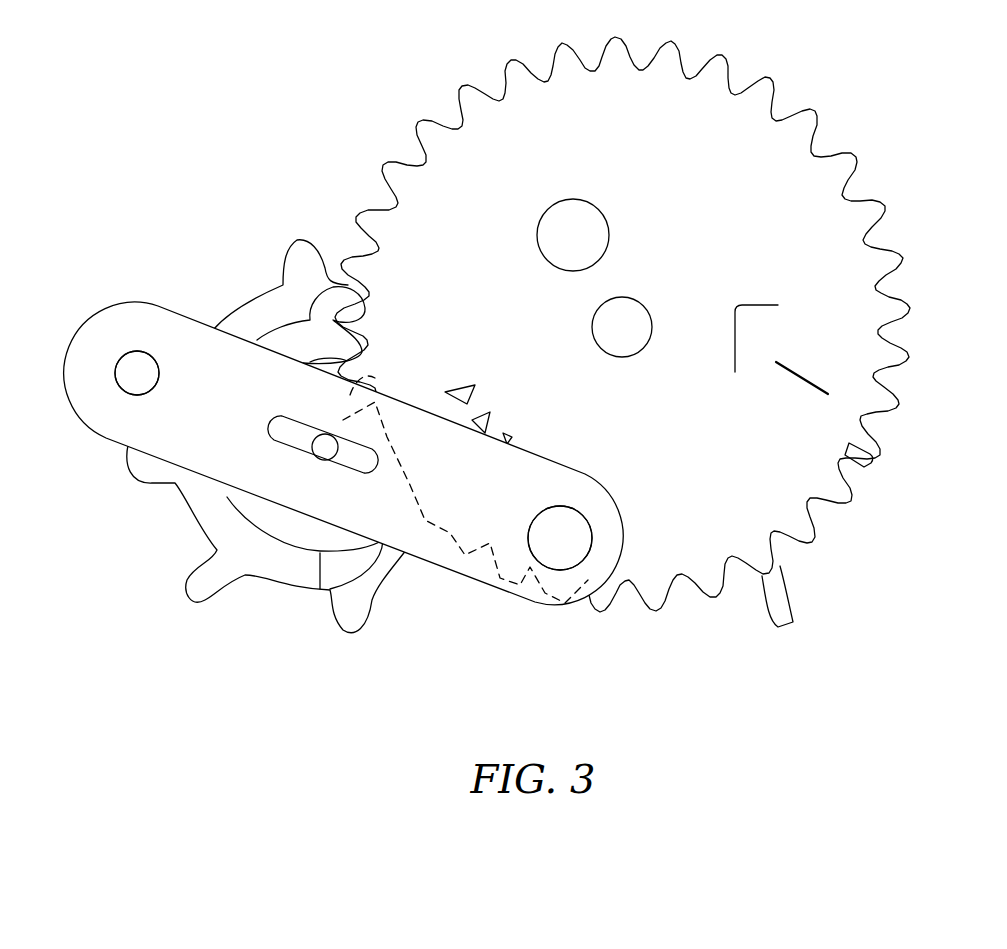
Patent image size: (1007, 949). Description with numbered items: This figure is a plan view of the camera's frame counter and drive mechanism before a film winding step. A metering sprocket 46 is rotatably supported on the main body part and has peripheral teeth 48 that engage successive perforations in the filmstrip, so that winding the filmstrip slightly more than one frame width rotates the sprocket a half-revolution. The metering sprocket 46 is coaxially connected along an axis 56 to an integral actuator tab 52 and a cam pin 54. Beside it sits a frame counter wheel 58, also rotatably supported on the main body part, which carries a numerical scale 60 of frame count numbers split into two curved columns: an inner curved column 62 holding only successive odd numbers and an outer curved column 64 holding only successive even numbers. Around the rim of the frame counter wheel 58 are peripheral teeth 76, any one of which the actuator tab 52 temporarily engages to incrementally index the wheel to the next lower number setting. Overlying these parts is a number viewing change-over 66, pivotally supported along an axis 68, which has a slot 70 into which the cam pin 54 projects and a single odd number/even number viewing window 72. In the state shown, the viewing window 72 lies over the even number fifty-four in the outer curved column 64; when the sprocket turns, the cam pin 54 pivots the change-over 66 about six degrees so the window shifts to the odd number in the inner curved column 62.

The metering sprocket 46 is at (275, 451).
The peripheral teeth 48 is at (185, 606).
The actuator tab 52 is at (407, 548).
The cam pin 54 is at (323, 448).
The axis 56 is at (328, 433).
The frame counter wheel 58 is at (602, 339).
The numerical scale 60 is at (778, 363).
The inner curved column 62 is at (487, 207).
The outer curved column 64 is at (385, 152).
The number viewing change-over 66 is at (337, 413).
The axis 68 is at (130, 370).
The slot 70 is at (283, 423).
The odd number/even number viewing window 72 is at (540, 528).
The peripheral teeth 76 is at (793, 624).